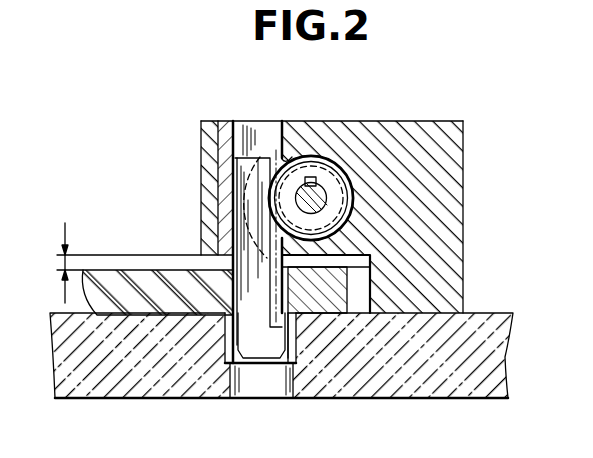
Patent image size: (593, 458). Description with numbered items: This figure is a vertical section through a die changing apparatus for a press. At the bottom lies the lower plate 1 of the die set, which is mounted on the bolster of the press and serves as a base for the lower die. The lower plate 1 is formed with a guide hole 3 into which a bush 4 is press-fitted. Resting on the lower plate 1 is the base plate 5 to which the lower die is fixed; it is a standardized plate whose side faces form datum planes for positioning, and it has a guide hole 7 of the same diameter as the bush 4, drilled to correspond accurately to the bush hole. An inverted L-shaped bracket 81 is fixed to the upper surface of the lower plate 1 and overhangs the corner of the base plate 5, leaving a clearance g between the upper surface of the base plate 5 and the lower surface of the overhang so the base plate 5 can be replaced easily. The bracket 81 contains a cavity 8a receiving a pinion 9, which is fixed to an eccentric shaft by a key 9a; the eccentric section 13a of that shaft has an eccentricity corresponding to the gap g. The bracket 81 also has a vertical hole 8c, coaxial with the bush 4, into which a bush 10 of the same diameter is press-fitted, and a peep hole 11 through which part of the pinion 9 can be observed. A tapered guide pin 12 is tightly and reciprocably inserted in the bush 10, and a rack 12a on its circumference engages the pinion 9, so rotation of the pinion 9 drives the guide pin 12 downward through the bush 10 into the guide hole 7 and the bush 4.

The lower plate 1 is at (487, 372).
The guide hole 3 is at (244, 388).
The bush 4 is at (297, 308).
The base plate 5 is at (100, 303).
The guide hole 7 is at (288, 288).
The cavity 8a is at (353, 182).
The vertical hole 8c is at (225, 140).
The bracket 81 is at (450, 195).
The pinion 9 is at (313, 170).
The key 9a is at (318, 180).
The bush 10 is at (230, 176).
The peep hole 11 is at (283, 152).
The guide pin 12 is at (268, 347).
The rack 12a is at (270, 279).
The eccentric section 13a is at (290, 261).
The clearance g is at (63, 264).